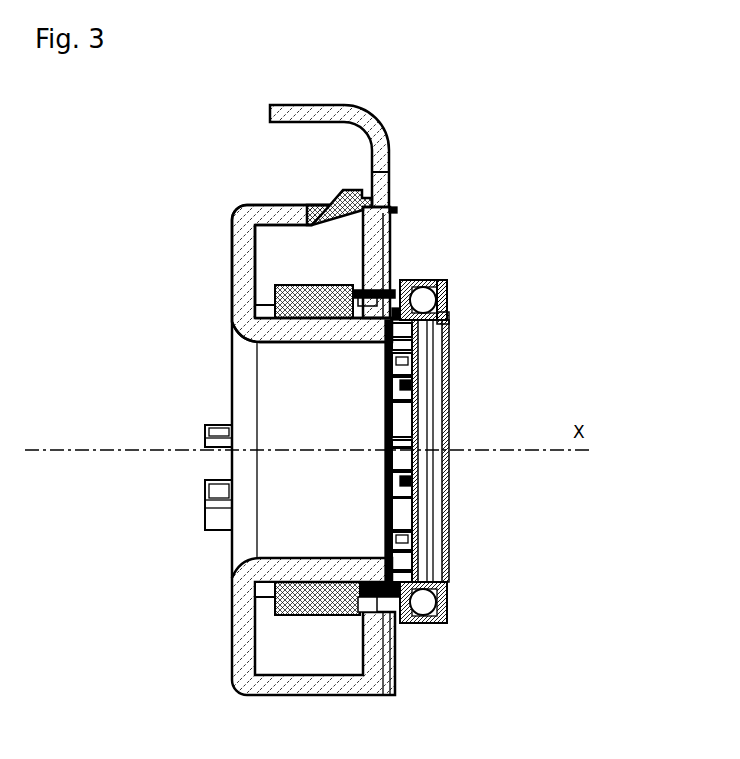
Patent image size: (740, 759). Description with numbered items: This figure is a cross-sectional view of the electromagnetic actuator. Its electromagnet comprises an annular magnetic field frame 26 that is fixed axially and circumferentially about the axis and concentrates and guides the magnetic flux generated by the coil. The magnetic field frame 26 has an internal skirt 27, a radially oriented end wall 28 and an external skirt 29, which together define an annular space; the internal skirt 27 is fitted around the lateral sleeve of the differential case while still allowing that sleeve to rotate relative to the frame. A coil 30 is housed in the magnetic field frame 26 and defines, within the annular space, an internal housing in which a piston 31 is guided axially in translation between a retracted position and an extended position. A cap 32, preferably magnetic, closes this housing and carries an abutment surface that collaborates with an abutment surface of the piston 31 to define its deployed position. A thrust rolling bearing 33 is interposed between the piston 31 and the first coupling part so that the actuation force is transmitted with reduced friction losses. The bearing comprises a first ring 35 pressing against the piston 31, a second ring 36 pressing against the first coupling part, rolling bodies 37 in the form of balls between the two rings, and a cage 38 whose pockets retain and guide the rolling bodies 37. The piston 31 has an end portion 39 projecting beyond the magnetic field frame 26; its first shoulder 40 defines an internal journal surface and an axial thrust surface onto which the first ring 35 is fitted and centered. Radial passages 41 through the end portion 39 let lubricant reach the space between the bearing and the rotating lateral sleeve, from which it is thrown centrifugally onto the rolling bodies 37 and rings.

The magnetic field frame 26 is at (242, 625).
The internal skirt 27 is at (260, 332).
The radially oriented end wall 28 is at (245, 273).
The external skirt 29 is at (257, 222).
The coil 30 is at (317, 237).
The piston 31 is at (272, 602).
The cap 32 is at (395, 215).
The thrust rolling bearing 33 is at (465, 618).
The first ring 35 is at (410, 278).
The second ring 36 is at (450, 282).
The rolling bodies 37 is at (448, 293).
The cage 38 is at (448, 320).
The end portion 39 is at (416, 575).
The first shoulder 40 is at (449, 550).
The passages 41 is at (402, 460).